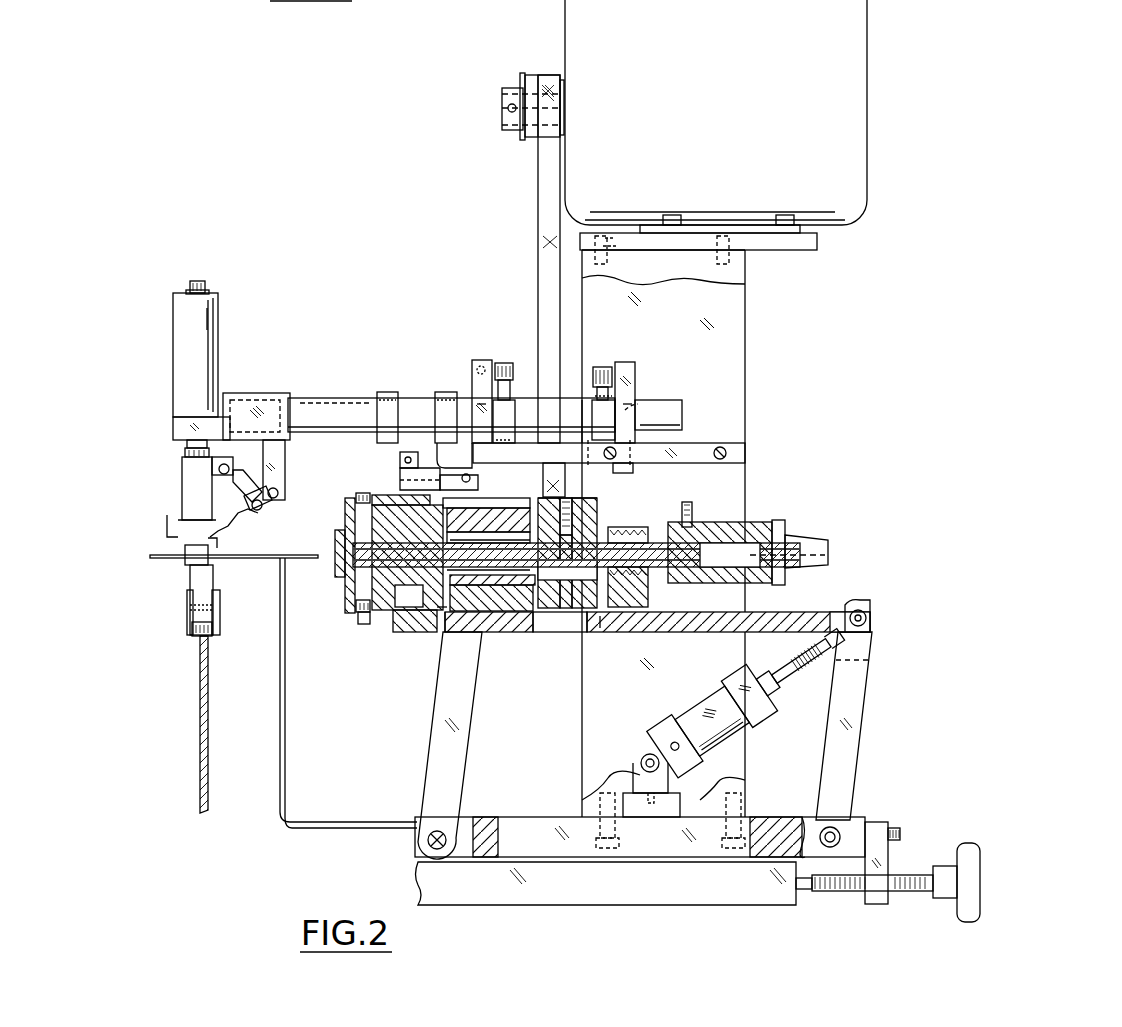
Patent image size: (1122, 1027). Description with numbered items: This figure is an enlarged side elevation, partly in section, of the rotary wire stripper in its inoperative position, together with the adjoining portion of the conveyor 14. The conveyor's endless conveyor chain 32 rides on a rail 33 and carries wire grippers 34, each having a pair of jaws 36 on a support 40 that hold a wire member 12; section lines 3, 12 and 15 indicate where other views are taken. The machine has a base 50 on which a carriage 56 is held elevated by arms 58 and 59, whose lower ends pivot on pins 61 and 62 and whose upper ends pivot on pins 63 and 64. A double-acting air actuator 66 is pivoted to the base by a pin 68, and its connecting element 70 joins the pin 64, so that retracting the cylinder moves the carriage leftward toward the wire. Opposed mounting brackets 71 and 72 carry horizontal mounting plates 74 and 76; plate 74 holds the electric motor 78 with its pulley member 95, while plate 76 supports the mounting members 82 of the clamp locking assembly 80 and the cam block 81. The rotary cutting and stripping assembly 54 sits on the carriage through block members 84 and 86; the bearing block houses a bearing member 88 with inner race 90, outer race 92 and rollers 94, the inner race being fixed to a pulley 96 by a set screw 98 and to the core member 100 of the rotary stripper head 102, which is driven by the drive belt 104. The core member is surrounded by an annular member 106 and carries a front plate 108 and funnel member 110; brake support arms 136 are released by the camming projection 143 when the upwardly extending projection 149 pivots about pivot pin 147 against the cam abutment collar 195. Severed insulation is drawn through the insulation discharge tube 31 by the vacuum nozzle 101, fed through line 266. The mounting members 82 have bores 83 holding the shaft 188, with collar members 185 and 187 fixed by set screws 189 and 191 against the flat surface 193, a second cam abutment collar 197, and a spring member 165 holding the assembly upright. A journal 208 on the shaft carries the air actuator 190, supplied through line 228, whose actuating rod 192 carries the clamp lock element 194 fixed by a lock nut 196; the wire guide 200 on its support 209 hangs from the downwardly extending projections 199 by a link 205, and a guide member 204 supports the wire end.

The section line 3- 3 is at (133, 272).
The wire member 12 is at (165, 268).
The conveyor 14 is at (422, 886).
The section line 15- 15 is at (75, 268).
The insulation discharge tube 31 is at (700, 572).
The conveyor chain 32 is at (199, 641).
The rail 33 is at (200, 690).
The wire gripper 34 is at (182, 583).
The jaws 36 is at (184, 561).
The support 40 is at (186, 613).
The base 50 is at (518, 817).
The rotary cutting and stripping assembly 54 is at (628, 490).
The carriage 56 is at (682, 635).
The arm 58 is at (436, 704).
The arm 59 is at (858, 712).
The pin 61 is at (428, 840).
The pin 62 is at (838, 830).
The pin 63 is at (455, 632).
The pin 64 is at (870, 618).
The double-acting air actuator 66 is at (703, 693).
The pin 68 is at (641, 760).
The connecting element 70 is at (828, 652).
The mounting bracket 71 is at (748, 268).
The mounting bracket 72 is at (748, 305).
The horizontal mounting plate 74 is at (820, 245).
The horizontal mounting plate 76 is at (748, 445).
The electric motor 78 is at (868, 170).
The clamp locking assembly 80 is at (158, 507).
The cam block 81 is at (500, 520).
The mounting member 82 is at (480, 360).
The bore 83 is at (475, 400).
The bearing block member 84 is at (488, 640).
The block member 86 is at (638, 527).
The bearing member 88 is at (522, 586).
The inner race 90 is at (407, 552).
The outer race 92 is at (500, 606).
The rollers 94 is at (567, 553).
The pulley member 95 is at (528, 75).
The pulley 96 is at (592, 512).
The set screw 98 is at (566, 497).
The core member 100 is at (390, 615).
The vacuum nozzle 101 is at (762, 522).
The rotary stripper head 102 is at (340, 628).
The drive belt 104 is at (543, 152).
The annular member 106 is at (414, 626).
The front plate 108 is at (345, 602).
The funnel member 110 is at (345, 572).
The brake support arm 136 is at (400, 458).
The camming projection 143 is at (400, 481).
The pivot pin 147 is at (472, 478).
The upwardly extending projection 149 is at (443, 405).
The spring member 165 is at (596, 372).
The collar member 185 is at (510, 386).
The collar member 187 is at (595, 410).
The shaft 188 is at (683, 416).
The set screw 189 is at (503, 365).
The air actuator 190 is at (218, 318).
The set screw 191 is at (604, 368).
The actuating rod 192 is at (182, 448).
The flat surface 193 is at (670, 402).
The clamp lock element 194 is at (182, 490).
The cam abutment collar 195 is at (383, 392).
The lock nut 196 is at (184, 456).
The cam abutment collar 197 is at (440, 458).
The downwardly extending projection 199 is at (287, 470).
The wire guide 200 is at (240, 516).
The guide member 204 is at (280, 665).
The link 205 is at (236, 474).
The journal 208 is at (262, 393).
The support 209 is at (276, 500).
The line 228 is at (206, 285).
The line 266 is at (690, 502).